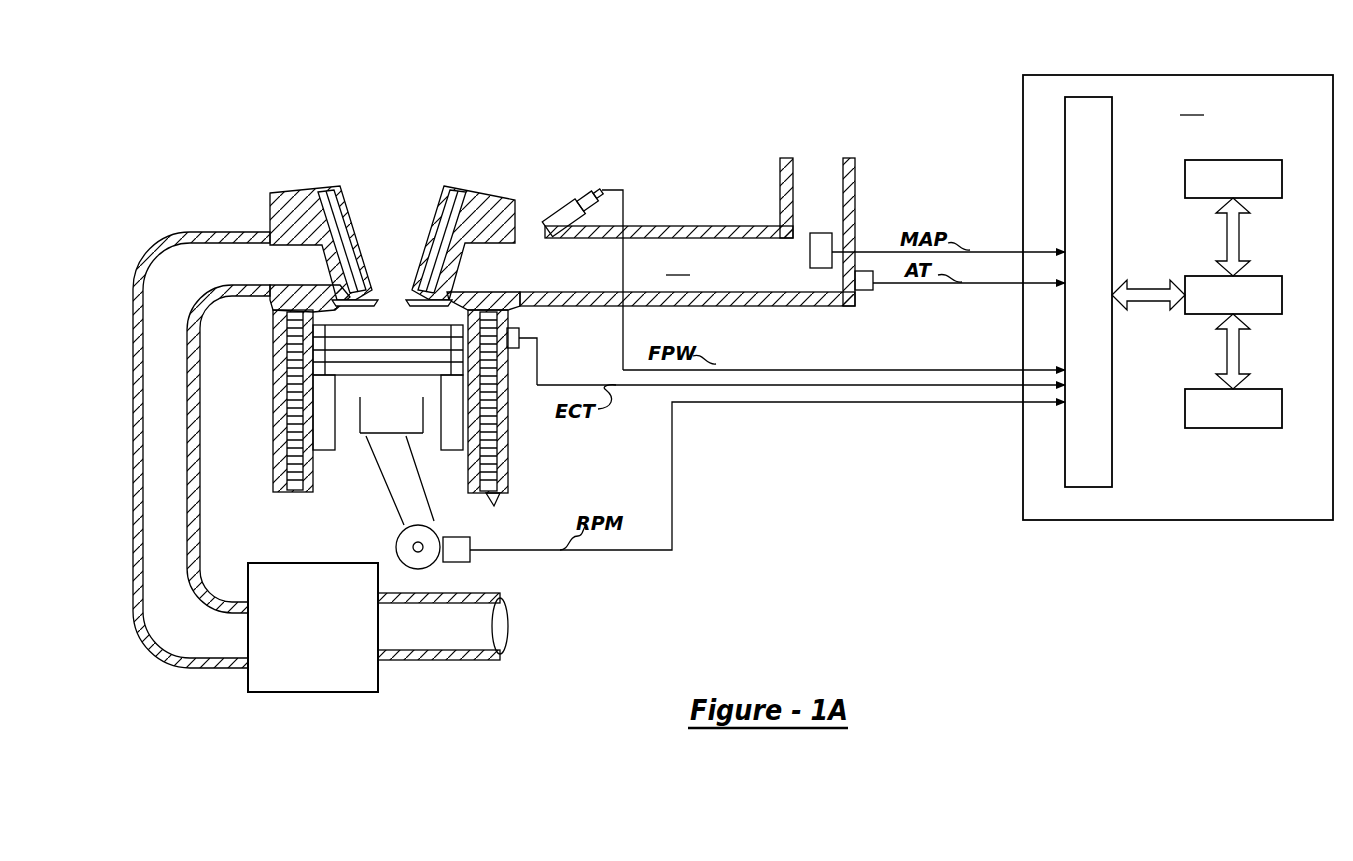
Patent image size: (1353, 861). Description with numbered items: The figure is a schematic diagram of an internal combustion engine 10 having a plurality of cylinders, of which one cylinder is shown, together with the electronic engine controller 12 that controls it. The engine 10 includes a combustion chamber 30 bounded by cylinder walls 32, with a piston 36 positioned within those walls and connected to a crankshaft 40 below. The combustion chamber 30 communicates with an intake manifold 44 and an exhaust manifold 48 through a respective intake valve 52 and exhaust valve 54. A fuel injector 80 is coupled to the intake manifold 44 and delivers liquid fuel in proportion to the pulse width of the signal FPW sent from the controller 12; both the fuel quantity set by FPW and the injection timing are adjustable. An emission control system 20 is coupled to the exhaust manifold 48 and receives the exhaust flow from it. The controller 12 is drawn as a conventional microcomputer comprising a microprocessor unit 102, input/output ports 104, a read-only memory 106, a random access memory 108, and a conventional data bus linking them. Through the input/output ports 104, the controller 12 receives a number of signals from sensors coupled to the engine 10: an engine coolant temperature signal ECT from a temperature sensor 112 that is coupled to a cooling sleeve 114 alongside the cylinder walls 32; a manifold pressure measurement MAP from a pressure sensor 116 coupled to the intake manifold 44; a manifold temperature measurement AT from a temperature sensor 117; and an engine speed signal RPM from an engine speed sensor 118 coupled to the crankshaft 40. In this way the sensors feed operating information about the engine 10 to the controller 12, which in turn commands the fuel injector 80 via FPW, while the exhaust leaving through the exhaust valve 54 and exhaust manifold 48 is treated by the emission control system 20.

The internal combustion engine 10 is at (262, 128).
The electronic engine controller 12 is at (1178, 297).
The emission control system 20 is at (335, 692).
The combustion chamber 30 is at (372, 298).
The cylinder walls 32 is at (312, 493).
The piston 36 is at (370, 432).
The crankshaft 40 is at (426, 566).
The intake manifold 44 is at (687, 232).
The exhaust manifold 48 is at (185, 283).
The intake valve 52 is at (455, 284).
The exhaust valve 54 is at (330, 282).
The fuel injector 80 is at (585, 204).
The microprocessor unit 102 is at (1262, 276).
The input/output ports 104 is at (1023, 117).
The read-only memory 106 is at (1238, 160).
The random access memory 108 is at (1228, 428).
The temperature sensor 112 is at (520, 332).
The cooling sleeve 114 is at (497, 501).
The pressure sensor 116 is at (822, 270).
The temperature sensor 117 is at (873, 291).
The engine speed sensor 118 is at (456, 538).